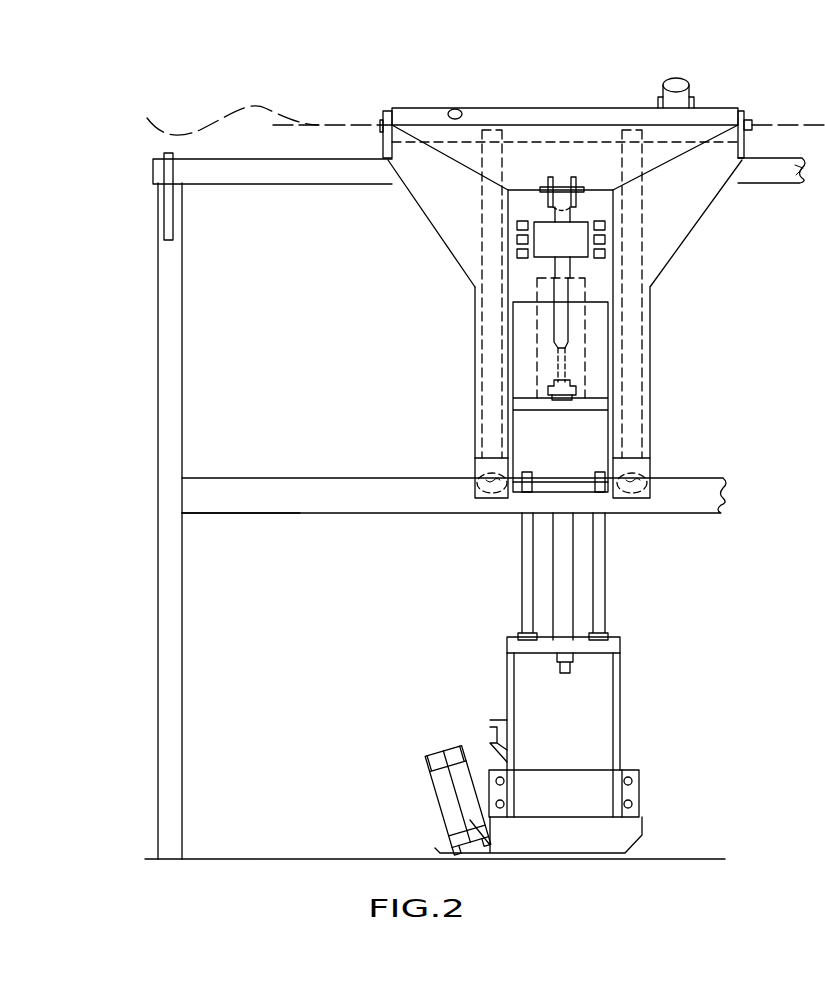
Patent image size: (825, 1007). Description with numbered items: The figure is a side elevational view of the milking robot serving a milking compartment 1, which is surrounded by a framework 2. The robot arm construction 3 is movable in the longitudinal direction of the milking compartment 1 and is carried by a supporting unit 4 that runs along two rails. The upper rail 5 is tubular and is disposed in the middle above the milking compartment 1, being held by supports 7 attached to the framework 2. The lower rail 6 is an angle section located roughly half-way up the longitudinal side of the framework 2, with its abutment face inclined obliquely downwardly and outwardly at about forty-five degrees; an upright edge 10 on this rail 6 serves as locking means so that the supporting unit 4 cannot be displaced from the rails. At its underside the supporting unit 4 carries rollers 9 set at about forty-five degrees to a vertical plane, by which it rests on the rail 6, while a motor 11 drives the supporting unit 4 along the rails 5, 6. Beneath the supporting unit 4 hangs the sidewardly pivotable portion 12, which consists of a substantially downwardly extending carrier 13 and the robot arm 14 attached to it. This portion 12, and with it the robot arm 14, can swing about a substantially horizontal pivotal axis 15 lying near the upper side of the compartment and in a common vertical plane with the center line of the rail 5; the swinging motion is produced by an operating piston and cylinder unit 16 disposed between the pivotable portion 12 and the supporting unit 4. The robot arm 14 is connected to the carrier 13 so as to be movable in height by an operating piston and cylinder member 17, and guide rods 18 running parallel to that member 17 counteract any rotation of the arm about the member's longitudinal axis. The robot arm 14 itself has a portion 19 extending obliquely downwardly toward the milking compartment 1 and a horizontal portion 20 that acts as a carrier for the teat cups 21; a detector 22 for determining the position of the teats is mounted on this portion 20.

The milking compartment 1 is at (303, 686).
The framework 2 is at (171, 377).
The robot arm construction 3 is at (661, 551).
The supporting unit 4 is at (488, 365).
The rail 5 is at (288, 173).
The rail 6 is at (303, 513).
The supports 7 is at (172, 226).
The rollers 9 is at (478, 477).
The upright edge 10 is at (333, 478).
The motor 11 is at (660, 97).
The sidewardly pivotable portion 12 is at (690, 215).
The carrier 13 is at (440, 213).
The robot arm 14 is at (628, 763).
The pivotal axis 15 is at (225, 110).
The operating piston and cylinder unit 16 is at (560, 318).
The operating piston and cylinder member 17 is at (560, 540).
The guide rods 18 is at (525, 573).
The portion 19 is at (600, 703).
The portion 20 is at (628, 835).
The teat cups 21 is at (456, 812).
The detector 22 is at (490, 722).